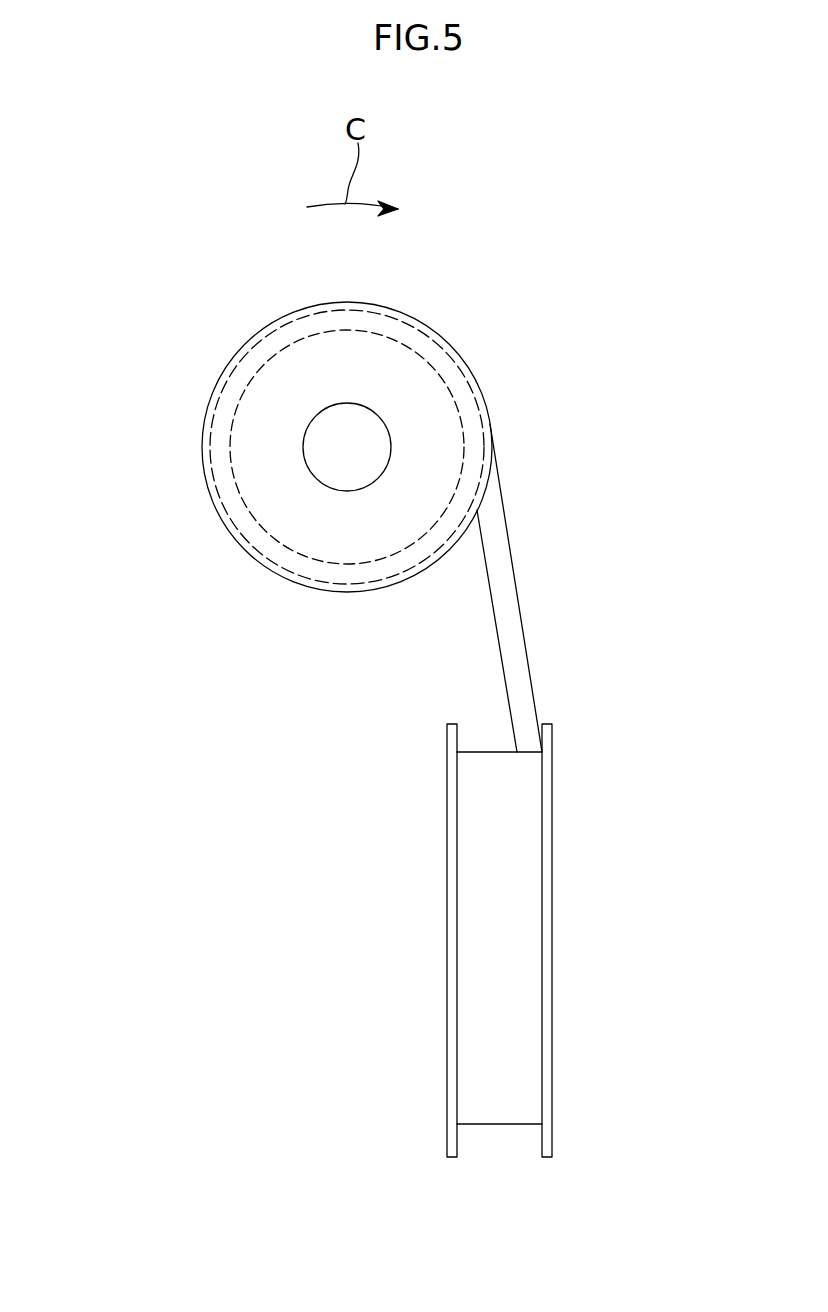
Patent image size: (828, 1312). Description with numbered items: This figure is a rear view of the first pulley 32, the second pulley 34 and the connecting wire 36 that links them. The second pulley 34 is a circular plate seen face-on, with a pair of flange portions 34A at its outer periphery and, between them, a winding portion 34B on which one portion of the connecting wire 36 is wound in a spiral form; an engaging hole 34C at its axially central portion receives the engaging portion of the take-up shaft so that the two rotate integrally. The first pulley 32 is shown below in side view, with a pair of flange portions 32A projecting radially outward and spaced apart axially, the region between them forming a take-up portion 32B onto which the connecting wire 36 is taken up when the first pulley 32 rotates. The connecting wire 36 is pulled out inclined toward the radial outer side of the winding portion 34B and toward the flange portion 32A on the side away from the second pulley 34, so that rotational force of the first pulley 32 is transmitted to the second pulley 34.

The first pulley 32 is at (514, 908).
The flange portions 32A is at (453, 723).
The take-up portion 32B is at (497, 750).
The second pulley 34 is at (276, 447).
The flange portions 34A is at (203, 465).
The winding portion 34B is at (290, 550).
The engaging hole 34C is at (378, 426).
The connecting wire 36 is at (518, 603).